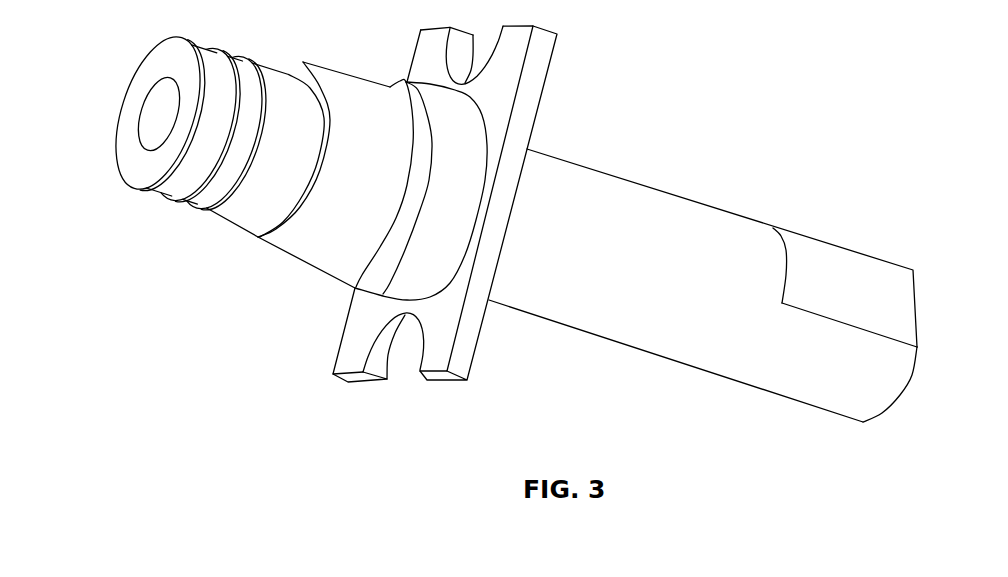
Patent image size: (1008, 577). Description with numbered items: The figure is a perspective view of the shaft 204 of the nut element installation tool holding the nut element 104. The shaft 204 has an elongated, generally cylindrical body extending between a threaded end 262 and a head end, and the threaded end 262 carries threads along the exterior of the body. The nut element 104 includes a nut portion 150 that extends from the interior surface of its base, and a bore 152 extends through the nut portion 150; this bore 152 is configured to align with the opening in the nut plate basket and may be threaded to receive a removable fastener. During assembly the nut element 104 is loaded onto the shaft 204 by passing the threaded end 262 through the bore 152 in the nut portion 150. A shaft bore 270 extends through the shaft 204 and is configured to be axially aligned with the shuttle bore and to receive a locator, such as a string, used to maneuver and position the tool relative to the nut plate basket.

The nut element 104 is at (468, 342).
The nut portion 150 is at (322, 238).
The bore 152 is at (268, 215).
The shaft 204 is at (658, 330).
The threaded end 262 is at (160, 200).
The shaft bore 270 is at (153, 118).